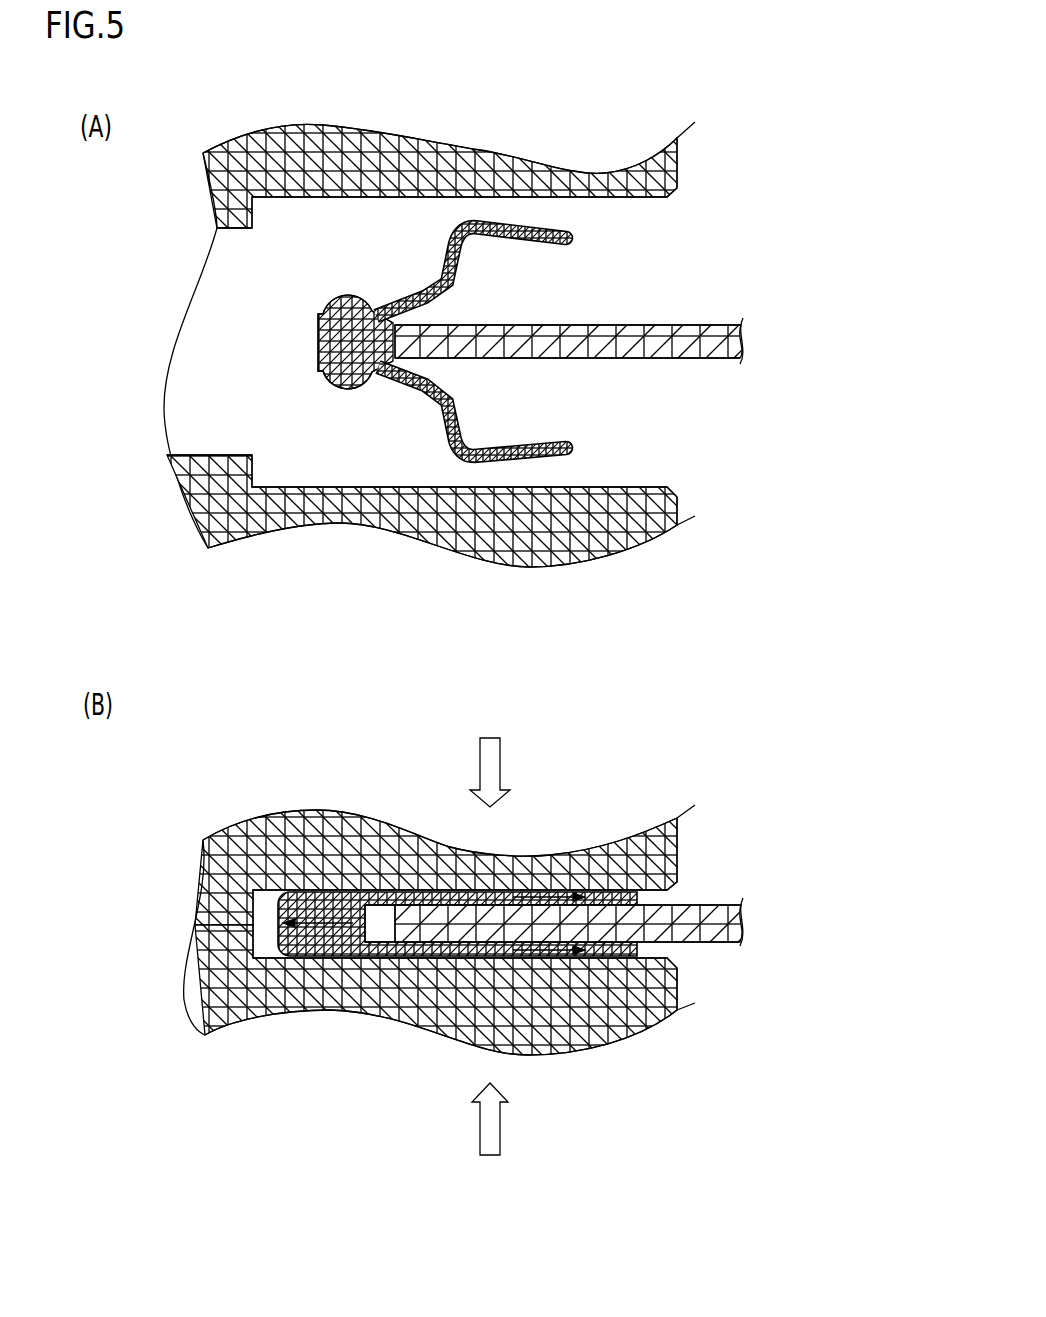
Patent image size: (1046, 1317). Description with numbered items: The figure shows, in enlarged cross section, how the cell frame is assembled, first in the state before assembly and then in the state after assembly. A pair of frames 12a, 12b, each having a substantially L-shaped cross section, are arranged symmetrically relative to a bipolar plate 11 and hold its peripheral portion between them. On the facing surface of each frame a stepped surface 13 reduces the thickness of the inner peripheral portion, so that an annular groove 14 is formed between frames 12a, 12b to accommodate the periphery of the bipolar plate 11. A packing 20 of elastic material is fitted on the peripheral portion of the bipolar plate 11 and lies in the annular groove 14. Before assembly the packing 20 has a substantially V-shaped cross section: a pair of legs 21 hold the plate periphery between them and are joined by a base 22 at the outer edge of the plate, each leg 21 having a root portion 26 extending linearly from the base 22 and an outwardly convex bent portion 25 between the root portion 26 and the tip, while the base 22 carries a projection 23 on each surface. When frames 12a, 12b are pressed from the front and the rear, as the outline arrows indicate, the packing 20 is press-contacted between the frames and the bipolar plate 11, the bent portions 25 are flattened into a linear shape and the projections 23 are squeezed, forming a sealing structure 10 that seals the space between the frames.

The connector 10 is at (181, 846).
The bipolar plate 11 is at (728, 345).
The frame 12a is at (218, 185).
The frame 12b is at (218, 498).
The stepped surface 13 is at (617, 198).
The annular groove 14 is at (265, 943).
The packing 20 is at (437, 679).
The leg 21 is at (551, 248).
The base 22 is at (317, 343).
The projection 23 is at (350, 388).
The bent portion 25 is at (448, 236).
The root portion 26 is at (417, 297).